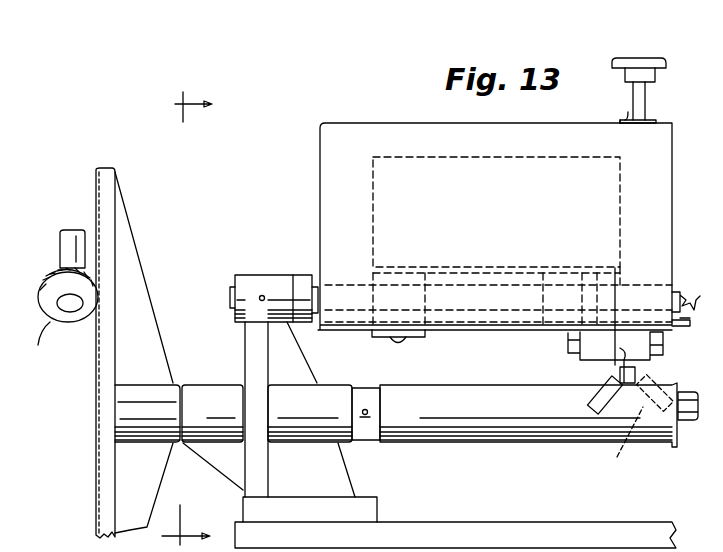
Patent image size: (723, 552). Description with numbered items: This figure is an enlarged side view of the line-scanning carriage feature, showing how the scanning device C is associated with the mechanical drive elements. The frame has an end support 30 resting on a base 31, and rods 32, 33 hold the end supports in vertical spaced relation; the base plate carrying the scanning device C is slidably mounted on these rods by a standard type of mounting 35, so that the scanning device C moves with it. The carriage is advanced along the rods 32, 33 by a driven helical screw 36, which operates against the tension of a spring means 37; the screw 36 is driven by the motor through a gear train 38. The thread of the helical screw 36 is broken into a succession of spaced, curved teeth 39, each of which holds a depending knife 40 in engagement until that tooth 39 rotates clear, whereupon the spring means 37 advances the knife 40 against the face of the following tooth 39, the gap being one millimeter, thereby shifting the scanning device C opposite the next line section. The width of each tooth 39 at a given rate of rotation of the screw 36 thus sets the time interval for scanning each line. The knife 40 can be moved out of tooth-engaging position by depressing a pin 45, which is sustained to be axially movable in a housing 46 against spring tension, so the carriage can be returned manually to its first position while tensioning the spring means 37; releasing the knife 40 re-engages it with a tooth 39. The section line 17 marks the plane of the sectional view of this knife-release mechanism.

The section line 17- 17 is at (200, 318).
The end support 30 is at (243, 343).
The base 31 is at (498, 521).
The rod 32 is at (320, 281).
The rod 33 is at (700, 382).
The mounting 35 is at (374, 337).
The helical screw 36 is at (447, 423).
The spring means 37 is at (703, 284).
The gear train 38 is at (95, 410).
The tooth 39 is at (608, 380).
The knife 40 is at (613, 373).
The pin 45 is at (645, 100).
The housing 46 is at (622, 116).
The scanning device C is at (325, 182).